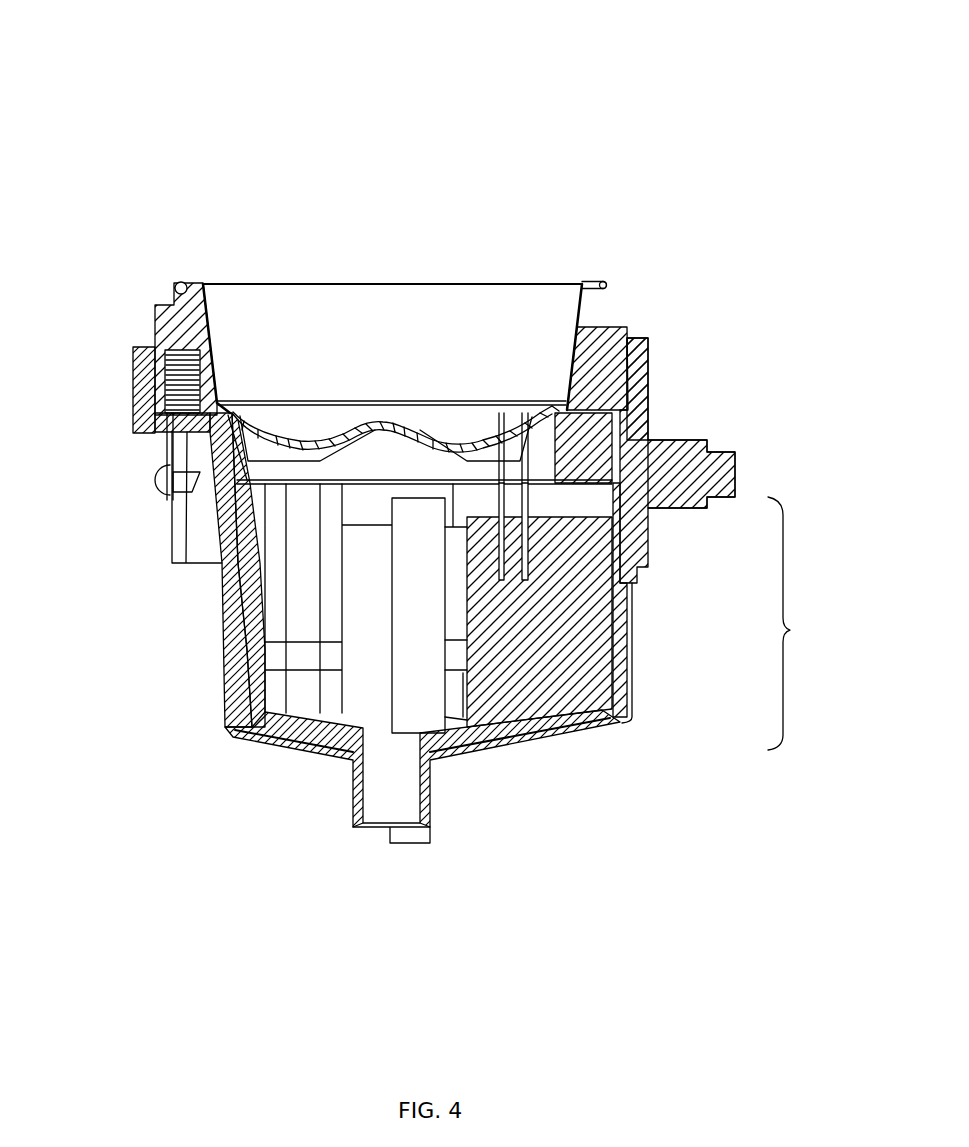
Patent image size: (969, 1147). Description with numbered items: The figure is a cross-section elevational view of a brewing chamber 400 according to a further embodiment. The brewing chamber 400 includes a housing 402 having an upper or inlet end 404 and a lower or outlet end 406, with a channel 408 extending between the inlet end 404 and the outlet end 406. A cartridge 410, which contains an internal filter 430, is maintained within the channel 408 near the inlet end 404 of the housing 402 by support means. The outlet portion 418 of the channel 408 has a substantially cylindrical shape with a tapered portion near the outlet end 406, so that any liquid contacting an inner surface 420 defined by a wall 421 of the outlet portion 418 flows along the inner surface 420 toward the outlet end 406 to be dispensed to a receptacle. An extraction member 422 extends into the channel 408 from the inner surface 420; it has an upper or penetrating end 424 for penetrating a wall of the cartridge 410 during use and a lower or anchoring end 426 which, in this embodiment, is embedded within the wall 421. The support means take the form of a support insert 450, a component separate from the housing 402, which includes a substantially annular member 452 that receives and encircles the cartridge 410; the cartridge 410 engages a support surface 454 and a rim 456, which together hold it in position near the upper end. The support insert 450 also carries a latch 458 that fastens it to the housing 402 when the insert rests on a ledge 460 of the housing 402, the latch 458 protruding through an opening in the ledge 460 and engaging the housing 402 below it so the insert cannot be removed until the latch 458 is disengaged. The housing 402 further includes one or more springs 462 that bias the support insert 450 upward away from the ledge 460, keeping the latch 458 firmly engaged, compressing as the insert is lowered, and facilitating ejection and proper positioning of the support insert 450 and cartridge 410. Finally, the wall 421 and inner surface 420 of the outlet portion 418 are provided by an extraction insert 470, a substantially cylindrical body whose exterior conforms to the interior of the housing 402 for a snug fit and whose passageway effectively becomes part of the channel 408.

The brewing chamber 400 is at (122, 102).
The housing 402 is at (203, 533).
The inlet end 404 is at (133, 345).
The outlet end 406 is at (343, 765).
The channel 408 is at (240, 600).
The cartridge 410 is at (330, 277).
The outlet portion 418 is at (809, 623).
The inner surface 420 is at (540, 660).
The wall 421 is at (607, 675).
The extraction member 422 is at (612, 530).
The penetrating end 424 is at (582, 400).
The anchoring end 426 is at (617, 513).
The internal filter 430 is at (452, 440).
The support insert 450 is at (144, 292).
The annular member 452 is at (620, 330).
The support surface 454 is at (602, 282).
The rim 456 is at (178, 280).
The latch 458 is at (158, 482).
The ledge 460 is at (155, 432).
The spring 462 is at (150, 396).
The extraction insert 470 is at (596, 684).